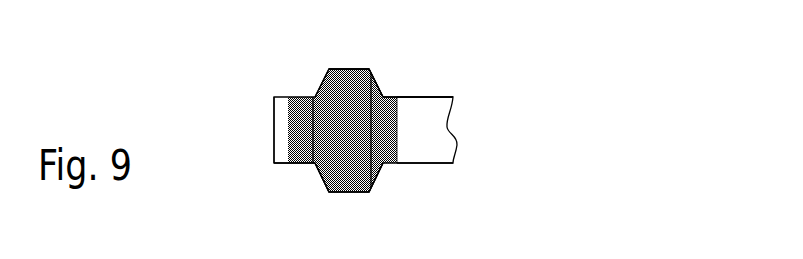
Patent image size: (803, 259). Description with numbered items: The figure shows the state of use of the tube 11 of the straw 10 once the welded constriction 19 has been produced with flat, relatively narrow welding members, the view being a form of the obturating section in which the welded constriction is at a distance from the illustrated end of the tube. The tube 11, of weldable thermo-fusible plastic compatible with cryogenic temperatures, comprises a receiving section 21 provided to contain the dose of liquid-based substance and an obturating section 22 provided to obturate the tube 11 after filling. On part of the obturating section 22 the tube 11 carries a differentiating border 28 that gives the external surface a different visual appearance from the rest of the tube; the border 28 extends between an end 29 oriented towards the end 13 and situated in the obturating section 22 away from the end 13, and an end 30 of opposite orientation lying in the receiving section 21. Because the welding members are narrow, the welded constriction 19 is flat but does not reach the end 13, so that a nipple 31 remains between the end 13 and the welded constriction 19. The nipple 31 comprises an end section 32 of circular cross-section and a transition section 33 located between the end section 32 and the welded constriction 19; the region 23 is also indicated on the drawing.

The straw 10 is at (487, 79).
The tube 11 is at (447, 142).
The end 13 is at (274, 129).
The welded constriction 19 is at (349, 178).
The receiving section 21 is at (430, 79).
The obturating section 22 is at (359, 60).
The transition region 23 is at (378, 90).
The differentiating border 28 is at (403, 205).
The end 29 is at (274, 153).
The end 30 is at (398, 137).
The nipple 31 is at (320, 152).
The end section 32 is at (293, 98).
The transition section 33 is at (303, 100).